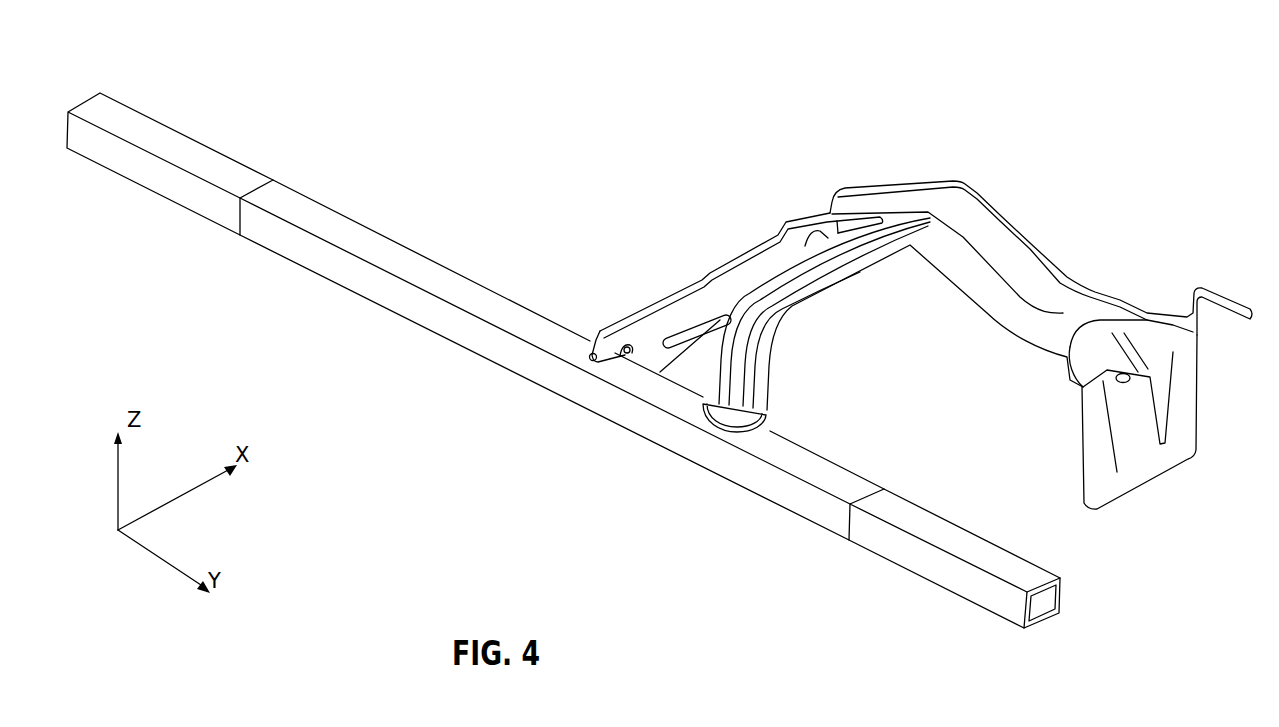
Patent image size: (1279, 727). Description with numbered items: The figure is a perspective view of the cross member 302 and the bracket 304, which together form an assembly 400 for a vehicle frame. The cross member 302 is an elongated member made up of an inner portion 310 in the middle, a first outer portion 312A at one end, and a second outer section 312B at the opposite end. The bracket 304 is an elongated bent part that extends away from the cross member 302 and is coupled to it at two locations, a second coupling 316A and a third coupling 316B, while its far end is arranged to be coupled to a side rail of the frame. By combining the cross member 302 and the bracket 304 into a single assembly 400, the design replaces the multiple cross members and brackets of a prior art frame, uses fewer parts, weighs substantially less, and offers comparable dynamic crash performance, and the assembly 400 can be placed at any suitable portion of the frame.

The assembly 400 is at (280, 62).
The cross member 302 is at (333, 283).
The bracket 304 is at (975, 193).
The inner portion 310 is at (712, 468).
The first outer portion 312A is at (157, 190).
The second outer section 312B is at (928, 582).
The second coupling 316A is at (778, 405).
The third coupling 316B is at (601, 303).